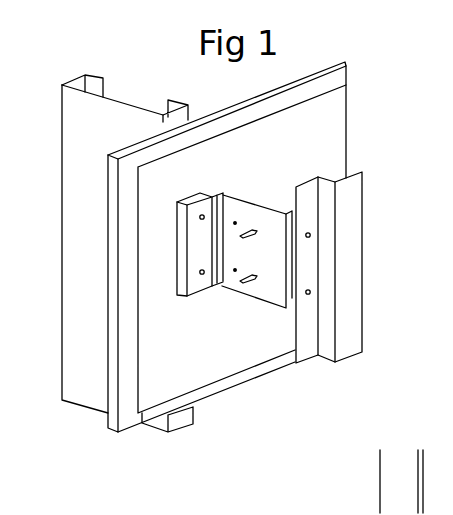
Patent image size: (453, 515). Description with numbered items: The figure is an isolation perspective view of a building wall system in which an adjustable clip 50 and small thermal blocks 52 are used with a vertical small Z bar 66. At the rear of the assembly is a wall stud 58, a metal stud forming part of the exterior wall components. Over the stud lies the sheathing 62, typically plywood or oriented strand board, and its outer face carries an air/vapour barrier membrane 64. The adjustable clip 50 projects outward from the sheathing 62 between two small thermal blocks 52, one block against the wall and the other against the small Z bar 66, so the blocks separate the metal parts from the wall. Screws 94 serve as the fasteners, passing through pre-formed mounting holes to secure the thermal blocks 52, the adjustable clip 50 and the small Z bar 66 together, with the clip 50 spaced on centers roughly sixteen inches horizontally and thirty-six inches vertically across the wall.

The adjustable clip 50 is at (258, 326).
The small thermal block 52 is at (182, 285).
The wall stud 58 is at (122, 103).
The sheathing 62 is at (345, 62).
The air/vapour barrier membrane 64 is at (337, 128).
The small Z bar 66 is at (355, 290).
The screw 94 is at (198, 217).